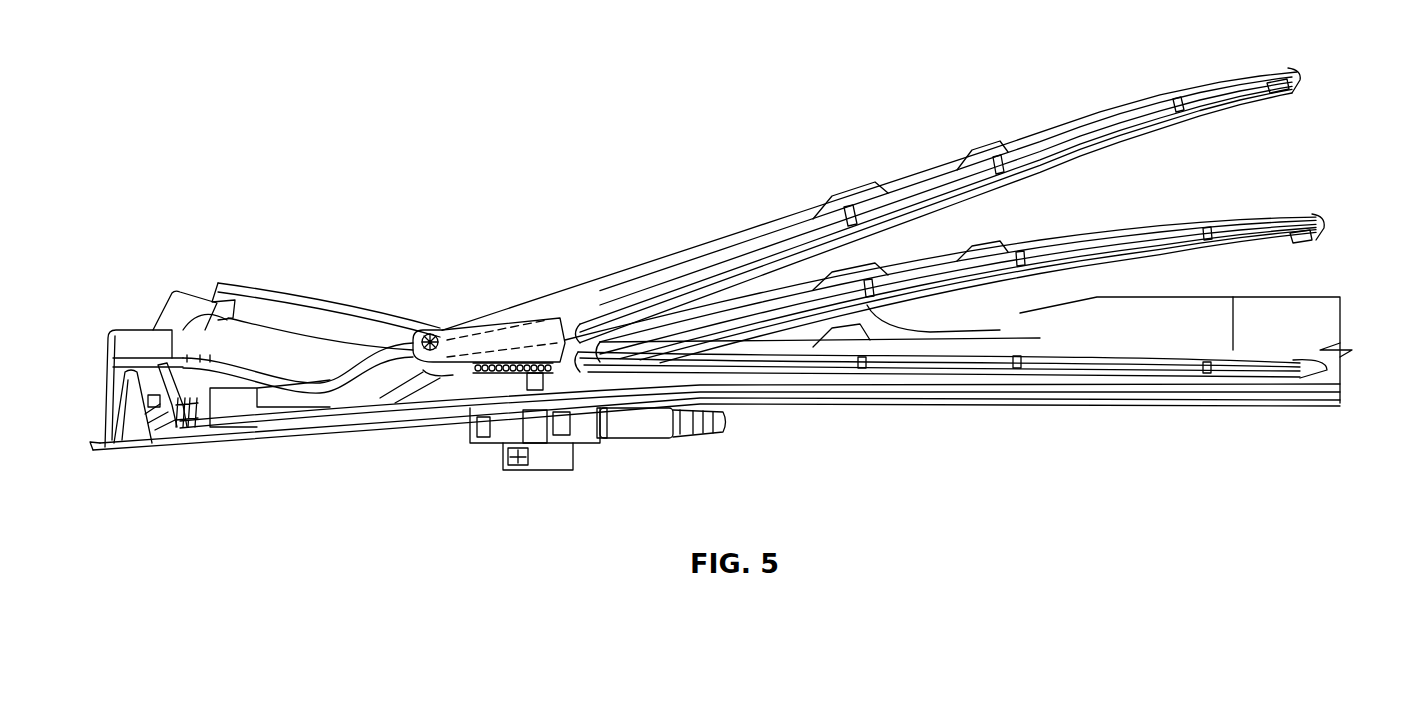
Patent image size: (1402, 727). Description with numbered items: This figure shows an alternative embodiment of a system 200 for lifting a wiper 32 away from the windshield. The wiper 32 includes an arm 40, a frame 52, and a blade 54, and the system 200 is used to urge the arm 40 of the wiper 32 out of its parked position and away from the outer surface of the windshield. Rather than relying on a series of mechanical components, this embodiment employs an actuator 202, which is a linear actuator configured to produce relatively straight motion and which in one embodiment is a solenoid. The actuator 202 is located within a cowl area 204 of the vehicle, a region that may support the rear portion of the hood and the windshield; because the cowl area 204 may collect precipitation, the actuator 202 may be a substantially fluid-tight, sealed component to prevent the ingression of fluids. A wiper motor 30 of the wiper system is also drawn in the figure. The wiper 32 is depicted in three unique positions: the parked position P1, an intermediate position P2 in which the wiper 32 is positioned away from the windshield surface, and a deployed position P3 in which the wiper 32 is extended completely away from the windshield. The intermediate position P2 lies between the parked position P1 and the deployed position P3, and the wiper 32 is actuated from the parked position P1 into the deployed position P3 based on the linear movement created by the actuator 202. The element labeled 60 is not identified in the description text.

The system 200 is at (503, 190).
The cowl area 204 is at (895, 408).
The arm 40 is at (563, 297).
The wiper 32 is at (917, 224).
The frame 52 is at (1075, 128).
The blade 54 is at (1165, 125).
The spoiler 60 is at (1070, 165).
The wiper motor 30 is at (660, 438).
The actuator 202 is at (540, 432).
The parked position P1 is at (1293, 363).
The intermediate position P2 is at (1323, 228).
The deployed position P3 is at (1295, 85).